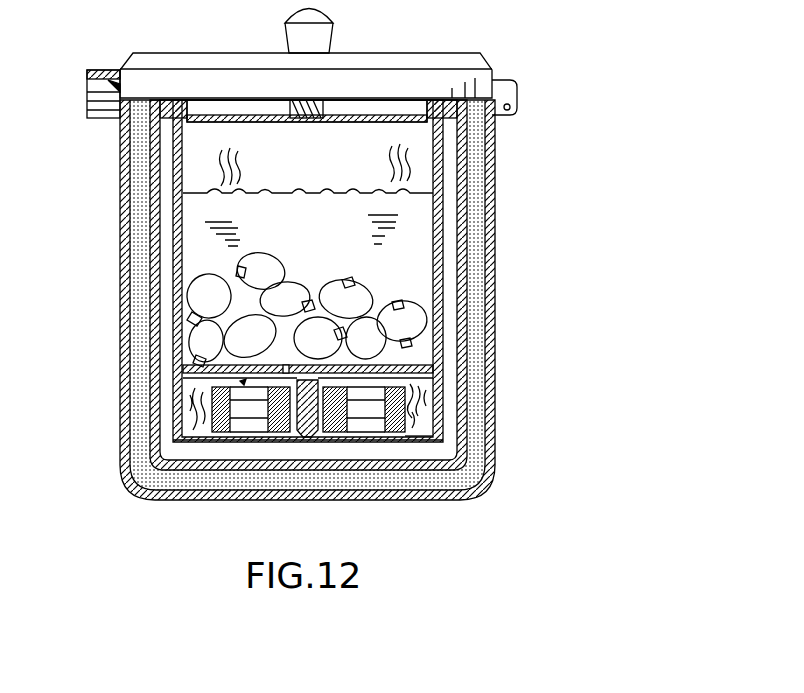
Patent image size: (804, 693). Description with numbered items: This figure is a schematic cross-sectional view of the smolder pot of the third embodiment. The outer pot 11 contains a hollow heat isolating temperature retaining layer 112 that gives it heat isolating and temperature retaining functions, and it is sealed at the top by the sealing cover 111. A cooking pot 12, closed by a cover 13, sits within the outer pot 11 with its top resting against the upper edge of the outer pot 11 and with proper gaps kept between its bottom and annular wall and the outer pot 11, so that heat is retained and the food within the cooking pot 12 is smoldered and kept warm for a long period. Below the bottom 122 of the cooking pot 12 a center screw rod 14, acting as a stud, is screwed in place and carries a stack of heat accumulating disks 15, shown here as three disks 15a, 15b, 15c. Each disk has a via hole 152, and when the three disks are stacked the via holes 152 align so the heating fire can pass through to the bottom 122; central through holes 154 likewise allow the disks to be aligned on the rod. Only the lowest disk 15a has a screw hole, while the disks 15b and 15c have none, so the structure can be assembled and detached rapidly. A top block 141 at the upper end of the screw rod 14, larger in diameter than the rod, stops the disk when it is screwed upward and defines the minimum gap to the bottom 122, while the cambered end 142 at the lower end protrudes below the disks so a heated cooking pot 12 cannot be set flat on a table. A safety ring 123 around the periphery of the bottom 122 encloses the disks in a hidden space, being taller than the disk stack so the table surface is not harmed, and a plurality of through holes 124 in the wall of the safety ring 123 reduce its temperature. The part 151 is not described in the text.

The outer pot 11 is at (497, 191).
The sealing cover 111 is at (450, 60).
The heat isolating temperature retaining layer 112 is at (477, 249).
The cooking pot 12 is at (446, 326).
The bottom 122 is at (410, 366).
The safety ring 123 is at (177, 438).
The through hole 124 is at (426, 406).
The cover 13 is at (322, 100).
The center screw rod 14 is at (278, 386).
The top block 141 is at (285, 364).
The cambered end 142 is at (306, 436).
The heat accumulating disk 15 is at (362, 418).
The heater block 151 is at (291, 432).
The via hole 152 is at (232, 418).
The central through hole 154 is at (326, 420).
The heat accumulating disk 15a is at (422, 434).
The heat accumulating disk 15b is at (416, 414).
The heat accumulating disk 15c is at (410, 385).